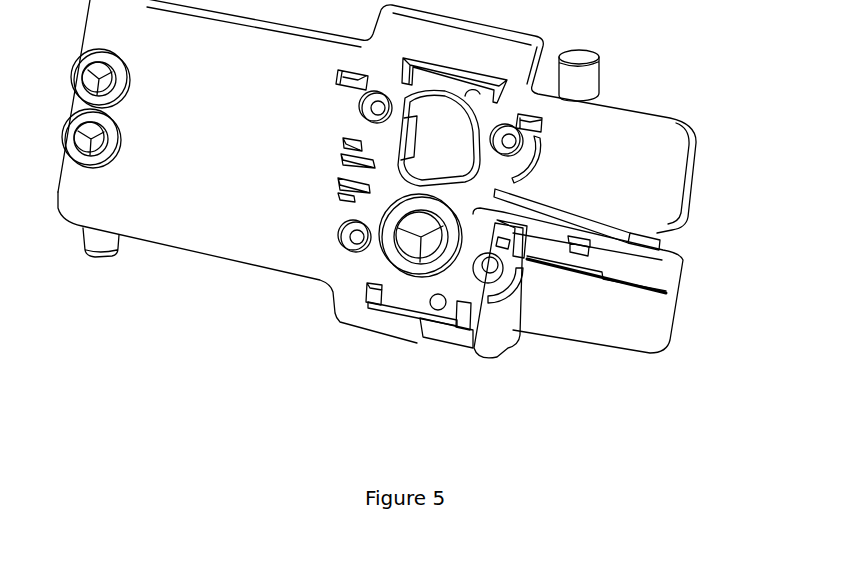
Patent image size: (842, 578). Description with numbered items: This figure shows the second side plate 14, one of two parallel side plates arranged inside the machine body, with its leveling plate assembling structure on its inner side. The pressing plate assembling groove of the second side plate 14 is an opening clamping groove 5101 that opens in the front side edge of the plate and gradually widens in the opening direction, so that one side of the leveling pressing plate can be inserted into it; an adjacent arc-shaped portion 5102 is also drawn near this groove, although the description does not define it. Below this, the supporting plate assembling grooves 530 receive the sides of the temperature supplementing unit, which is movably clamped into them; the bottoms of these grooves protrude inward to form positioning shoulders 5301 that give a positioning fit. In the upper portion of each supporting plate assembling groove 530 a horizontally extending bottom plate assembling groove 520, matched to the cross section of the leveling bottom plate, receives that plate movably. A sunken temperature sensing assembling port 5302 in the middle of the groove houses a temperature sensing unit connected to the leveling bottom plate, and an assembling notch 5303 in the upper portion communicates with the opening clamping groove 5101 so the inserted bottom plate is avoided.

The second side plate 14 is at (240, 233).
The opening clamping groove 5101 is at (657, 238).
The arc-shaped limiting portion 5102 is at (534, 204).
The bottom plate assembling groove 520 is at (470, 353).
The supporting plate assembling groove 530 is at (558, 247).
The positioning shoulder 5301 is at (528, 263).
The temperature sensing assembling port 5302 is at (583, 250).
The assembling notch 5303 is at (635, 243).